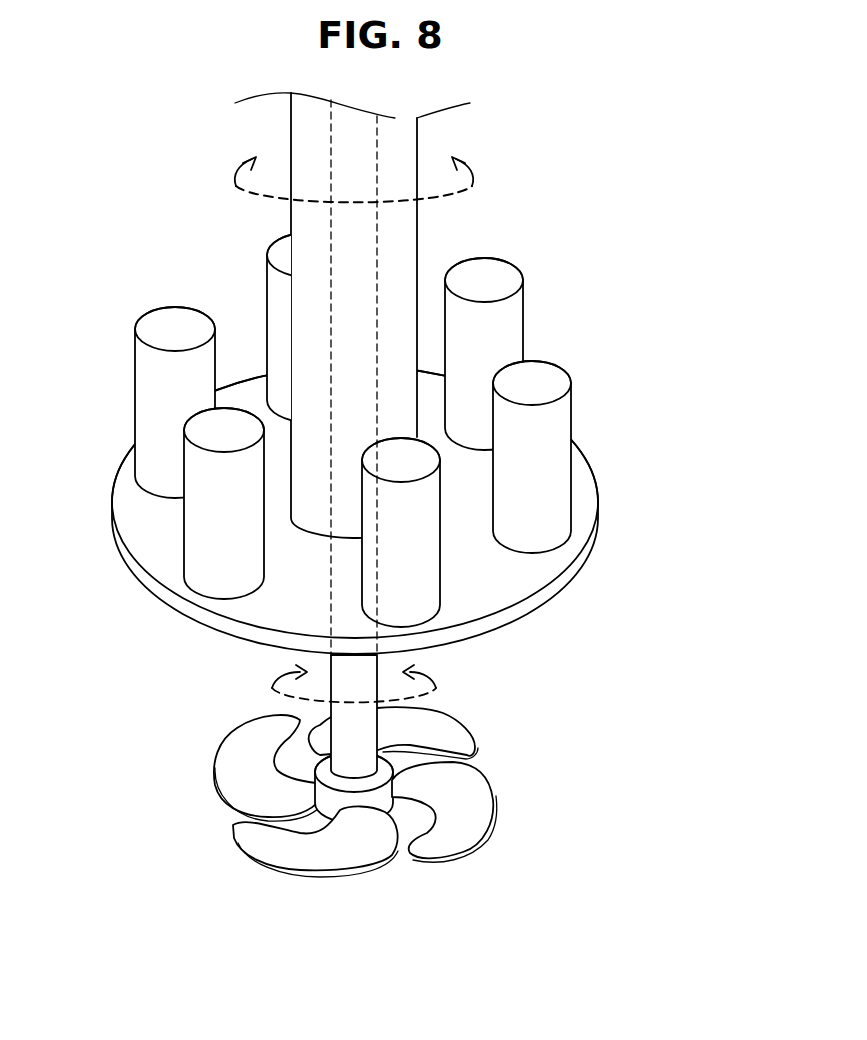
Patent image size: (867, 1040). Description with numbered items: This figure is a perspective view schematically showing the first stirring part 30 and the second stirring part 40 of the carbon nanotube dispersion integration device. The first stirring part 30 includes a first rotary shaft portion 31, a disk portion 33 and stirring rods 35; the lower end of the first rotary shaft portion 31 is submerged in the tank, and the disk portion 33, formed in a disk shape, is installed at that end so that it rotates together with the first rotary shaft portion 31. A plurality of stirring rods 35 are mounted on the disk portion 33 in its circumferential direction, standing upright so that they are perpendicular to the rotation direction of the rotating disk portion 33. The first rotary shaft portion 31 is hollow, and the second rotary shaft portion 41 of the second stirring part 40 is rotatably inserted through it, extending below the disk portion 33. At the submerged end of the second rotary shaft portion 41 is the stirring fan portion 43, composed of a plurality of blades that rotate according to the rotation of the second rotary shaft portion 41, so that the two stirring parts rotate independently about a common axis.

The first stirring part 30 is at (411, 373).
The first rotary shaft portion 31 is at (417, 143).
The disk portion 33 is at (582, 498).
The stirring rod 35 is at (530, 385).
The second stirring part 40 is at (265, 488).
The second rotary shaft portion 41 is at (357, 681).
The stirring fan portion 43 is at (247, 782).